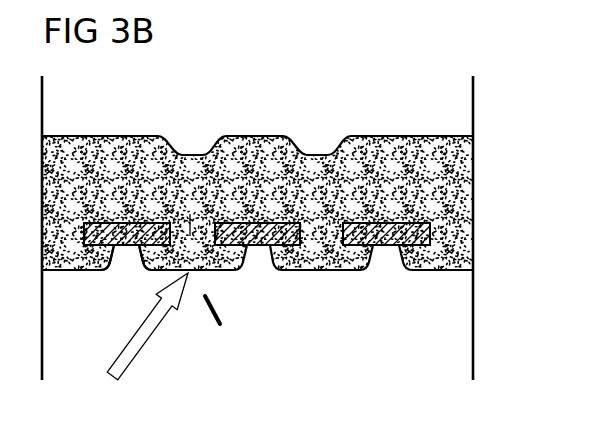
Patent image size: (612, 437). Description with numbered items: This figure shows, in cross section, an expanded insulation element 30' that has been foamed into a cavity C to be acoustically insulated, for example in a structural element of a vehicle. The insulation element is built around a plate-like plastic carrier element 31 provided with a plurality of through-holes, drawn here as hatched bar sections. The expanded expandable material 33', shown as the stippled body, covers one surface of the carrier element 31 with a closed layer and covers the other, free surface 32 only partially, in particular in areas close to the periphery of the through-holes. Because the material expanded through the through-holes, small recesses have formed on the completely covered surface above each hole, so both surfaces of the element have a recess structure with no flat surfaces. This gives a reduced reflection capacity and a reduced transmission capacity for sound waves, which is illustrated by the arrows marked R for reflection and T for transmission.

The expanded insulation element 30' is at (258, 171).
The carrier element 31 is at (385, 248).
The free surface 32 is at (122, 257).
The expanded expandable material 33' is at (292, 203).
The transmission arrow T is at (214, 223).
The reflection arrow R is at (214, 306).
The cavity C is at (475, 345).